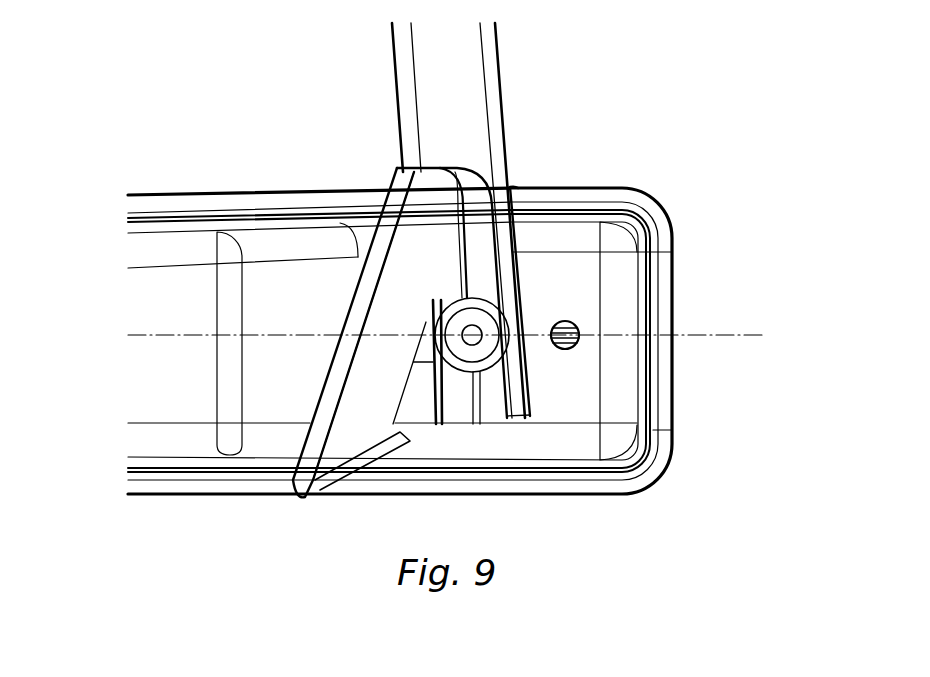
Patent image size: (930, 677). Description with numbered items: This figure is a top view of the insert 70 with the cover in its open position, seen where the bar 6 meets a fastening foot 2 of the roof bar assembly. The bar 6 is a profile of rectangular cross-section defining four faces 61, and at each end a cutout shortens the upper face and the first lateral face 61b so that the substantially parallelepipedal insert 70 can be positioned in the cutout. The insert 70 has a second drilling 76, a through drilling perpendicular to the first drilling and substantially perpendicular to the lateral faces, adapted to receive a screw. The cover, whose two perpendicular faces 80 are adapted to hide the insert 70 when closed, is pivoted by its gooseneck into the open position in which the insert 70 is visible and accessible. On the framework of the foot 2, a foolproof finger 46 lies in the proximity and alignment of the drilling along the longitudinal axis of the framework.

The fastening foot 2 is at (672, 202).
The bar 6 is at (382, 63).
The face 61 is at (533, 220).
The first lateral face 61b is at (457, 68).
The insert 70 is at (515, 200).
The second drilling 76 is at (480, 327).
The perpendicular faces 80 is at (418, 220).
The foolproof finger 46 is at (578, 344).